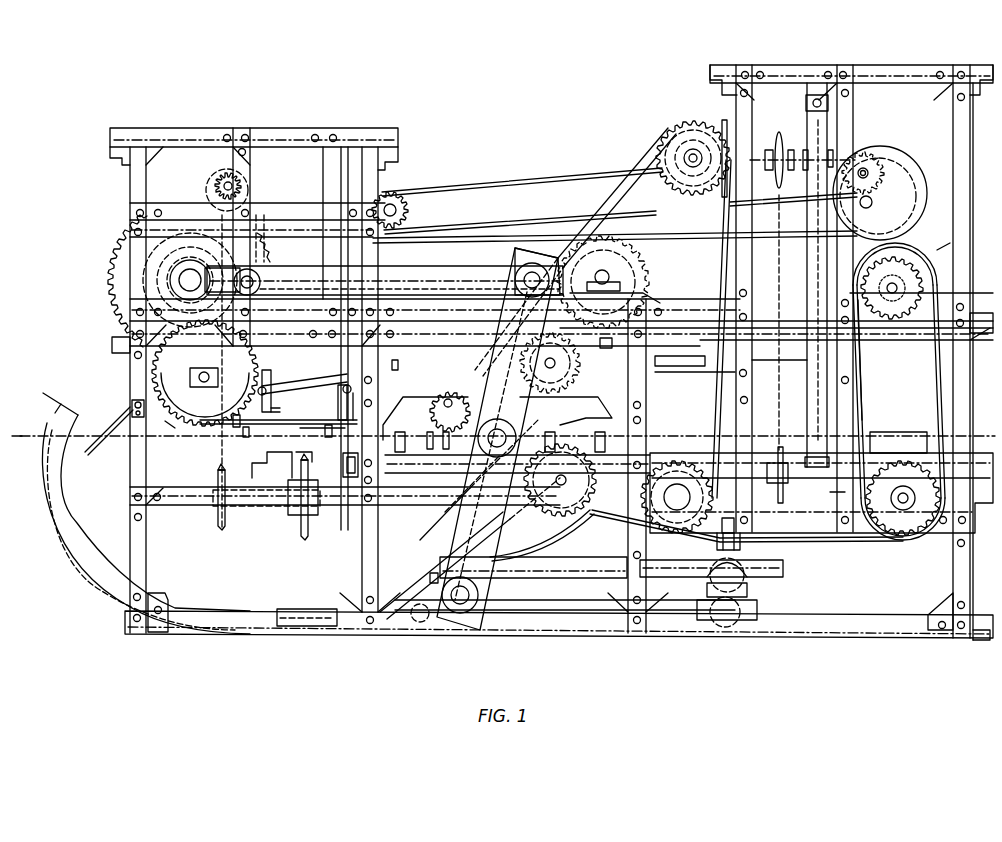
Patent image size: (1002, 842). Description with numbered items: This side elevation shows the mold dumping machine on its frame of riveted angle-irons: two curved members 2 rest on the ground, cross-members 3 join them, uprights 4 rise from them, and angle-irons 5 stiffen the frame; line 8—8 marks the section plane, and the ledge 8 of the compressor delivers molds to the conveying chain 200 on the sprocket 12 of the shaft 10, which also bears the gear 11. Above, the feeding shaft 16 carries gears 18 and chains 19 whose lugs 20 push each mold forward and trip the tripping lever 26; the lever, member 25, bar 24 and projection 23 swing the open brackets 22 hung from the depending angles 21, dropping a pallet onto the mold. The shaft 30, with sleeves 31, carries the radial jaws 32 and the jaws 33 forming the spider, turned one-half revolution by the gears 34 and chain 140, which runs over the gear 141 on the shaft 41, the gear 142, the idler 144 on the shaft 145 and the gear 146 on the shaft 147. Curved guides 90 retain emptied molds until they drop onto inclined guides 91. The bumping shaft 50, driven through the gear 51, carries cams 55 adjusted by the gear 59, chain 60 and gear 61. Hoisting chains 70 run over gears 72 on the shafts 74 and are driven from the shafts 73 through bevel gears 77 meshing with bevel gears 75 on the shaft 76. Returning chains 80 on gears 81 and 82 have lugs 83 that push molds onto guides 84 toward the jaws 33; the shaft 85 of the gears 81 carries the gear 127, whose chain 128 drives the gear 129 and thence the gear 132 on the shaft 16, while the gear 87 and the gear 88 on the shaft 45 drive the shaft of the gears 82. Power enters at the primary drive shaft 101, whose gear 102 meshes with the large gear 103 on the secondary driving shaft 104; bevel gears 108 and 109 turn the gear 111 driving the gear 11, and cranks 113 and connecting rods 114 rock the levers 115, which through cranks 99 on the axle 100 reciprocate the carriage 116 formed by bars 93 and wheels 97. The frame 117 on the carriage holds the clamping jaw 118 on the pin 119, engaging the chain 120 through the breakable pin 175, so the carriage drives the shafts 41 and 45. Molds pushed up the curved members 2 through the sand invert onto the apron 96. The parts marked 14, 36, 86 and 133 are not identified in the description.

The curved members 2 is at (75, 520).
The cross-members 3 is at (158, 624).
The uprights 4 is at (372, 560).
The angle-irons 5 is at (290, 130).
The mold discharging ledge or platform 8 is at (505, 427).
The shaft 10 is at (272, 507).
The gear 11 is at (226, 520).
The sprocket or gear 12 is at (310, 518).
The upright post 14 is at (140, 562).
The shaft 16 is at (205, 373).
The gears 18 is at (448, 398).
The chains 19 is at (322, 417).
The lugs 20 is at (380, 368).
The depending angles 21 is at (304, 380).
The open brackets 22 is at (279, 391).
The projection 23 is at (252, 426).
The bar 24 is at (278, 431).
The member 25 is at (338, 388).
The oscillatory tripping lever 26 is at (343, 460).
The shaft 30 is at (480, 479).
The sleeves 31 is at (555, 442).
The jaws 32 is at (503, 439).
The jaws 33 is at (445, 508).
The gears 34 is at (425, 423).
The plate 36 is at (547, 418).
The shaft 41 is at (674, 480).
The shaft 45 is at (905, 510).
The shaft 50 is at (872, 200).
The gear 51 is at (912, 190).
The cams 55 is at (905, 158).
The gear 59 is at (873, 150).
The chain 60 is at (538, 178).
The gear 61 is at (409, 208).
The hoisting chains 70 is at (862, 413).
The gears 72 is at (781, 448).
The shafts 73 is at (792, 150).
The shafts 74 is at (840, 492).
The bevel gears 75 is at (660, 186).
The shaft 76 is at (693, 148).
The bevel gears 77 is at (730, 128).
The conveyer chains 80 is at (665, 228).
The gears 81 is at (660, 300).
The gears 82 is at (908, 325).
The lugs 83 is at (756, 226).
The guides 84 is at (695, 374).
The shaft 85 is at (622, 280).
The pulley 86 is at (896, 286).
The gear 87 is at (933, 253).
The gear 88 is at (905, 462).
The guides 90 is at (580, 533).
The guides 91 is at (400, 578).
The bars 93 is at (290, 607).
The apron or table 96 is at (97, 448).
The wheels 97 is at (415, 624).
The cranks 99 is at (570, 568).
The axle 100 is at (712, 626).
The primary drive shaft 101 is at (242, 184).
The gear 102 is at (215, 184).
The large gear 103 is at (110, 256).
The secondary driving shaft 104 is at (195, 277).
The bevel gear 108 is at (150, 292).
The bevel gear 109 is at (266, 250).
The gear 111 is at (258, 200).
The cranks 113 is at (190, 277).
The connecting rods 114 is at (384, 280).
The rocking levers 115 is at (500, 332).
The carriage 116 is at (607, 614).
The frame 117 is at (750, 592).
The clamping jaw 118 is at (740, 546).
The pin 119 is at (714, 548).
The chain 120 is at (832, 540).
The gear 127 is at (647, 262).
The chain 128 is at (503, 243).
The gear 129 is at (138, 280).
The gear 132 is at (190, 426).
The gear 133 is at (550, 363).
The chain 140 is at (722, 413).
The gear 141 is at (702, 462).
The gear 142 is at (660, 138).
The idler 144 is at (562, 346).
The shaft 145 is at (679, 352).
The gear 146 is at (545, 500).
The shaft 147 is at (565, 505).
The pin 175 is at (708, 562).
The conveying chain 200 is at (262, 460).